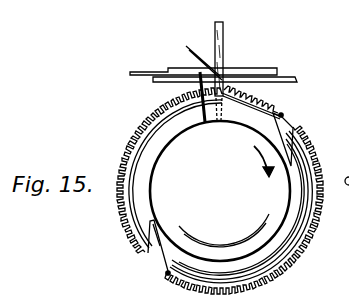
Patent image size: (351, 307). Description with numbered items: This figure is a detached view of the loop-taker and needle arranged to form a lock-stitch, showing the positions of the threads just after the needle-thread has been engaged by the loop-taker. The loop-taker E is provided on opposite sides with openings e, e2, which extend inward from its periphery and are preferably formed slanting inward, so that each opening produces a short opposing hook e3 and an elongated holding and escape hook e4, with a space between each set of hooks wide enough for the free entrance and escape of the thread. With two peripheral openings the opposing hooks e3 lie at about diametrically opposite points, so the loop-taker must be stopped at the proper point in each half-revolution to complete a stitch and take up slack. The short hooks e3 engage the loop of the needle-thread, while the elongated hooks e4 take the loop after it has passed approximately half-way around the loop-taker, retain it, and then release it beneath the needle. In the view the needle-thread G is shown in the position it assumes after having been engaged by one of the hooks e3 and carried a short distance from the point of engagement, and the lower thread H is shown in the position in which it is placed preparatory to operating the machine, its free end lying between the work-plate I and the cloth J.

The loop-taker E is at (220, 191).
The opening e is at (283, 139).
The opening e2 is at (152, 258).
The opposing hook e3 is at (284, 112).
The holding and escape hook e4 is at (300, 133).
The needle-thread G is at (204, 71).
The lower thread H is at (200, 81).
The work-plate I is at (150, 83).
The cloth J is at (172, 70).